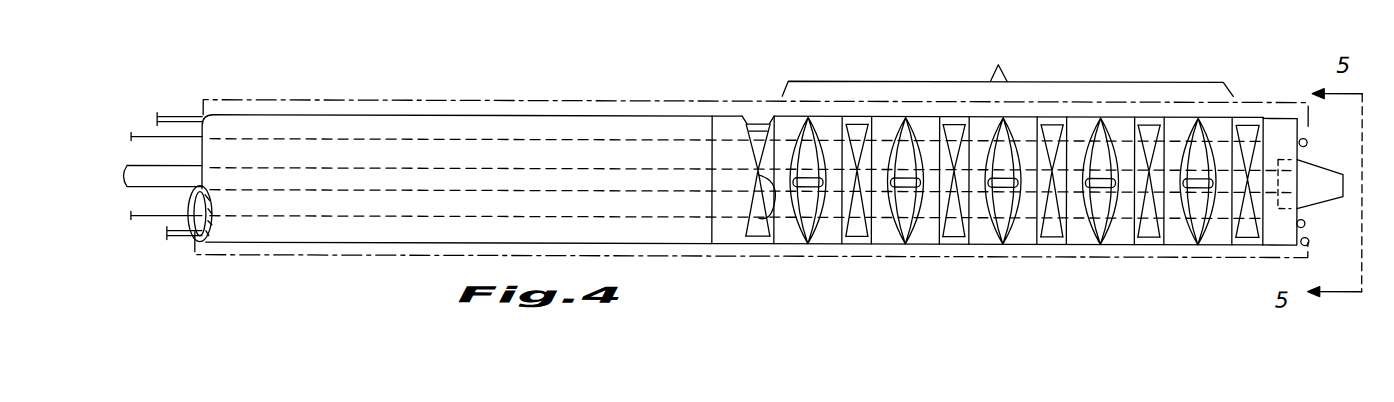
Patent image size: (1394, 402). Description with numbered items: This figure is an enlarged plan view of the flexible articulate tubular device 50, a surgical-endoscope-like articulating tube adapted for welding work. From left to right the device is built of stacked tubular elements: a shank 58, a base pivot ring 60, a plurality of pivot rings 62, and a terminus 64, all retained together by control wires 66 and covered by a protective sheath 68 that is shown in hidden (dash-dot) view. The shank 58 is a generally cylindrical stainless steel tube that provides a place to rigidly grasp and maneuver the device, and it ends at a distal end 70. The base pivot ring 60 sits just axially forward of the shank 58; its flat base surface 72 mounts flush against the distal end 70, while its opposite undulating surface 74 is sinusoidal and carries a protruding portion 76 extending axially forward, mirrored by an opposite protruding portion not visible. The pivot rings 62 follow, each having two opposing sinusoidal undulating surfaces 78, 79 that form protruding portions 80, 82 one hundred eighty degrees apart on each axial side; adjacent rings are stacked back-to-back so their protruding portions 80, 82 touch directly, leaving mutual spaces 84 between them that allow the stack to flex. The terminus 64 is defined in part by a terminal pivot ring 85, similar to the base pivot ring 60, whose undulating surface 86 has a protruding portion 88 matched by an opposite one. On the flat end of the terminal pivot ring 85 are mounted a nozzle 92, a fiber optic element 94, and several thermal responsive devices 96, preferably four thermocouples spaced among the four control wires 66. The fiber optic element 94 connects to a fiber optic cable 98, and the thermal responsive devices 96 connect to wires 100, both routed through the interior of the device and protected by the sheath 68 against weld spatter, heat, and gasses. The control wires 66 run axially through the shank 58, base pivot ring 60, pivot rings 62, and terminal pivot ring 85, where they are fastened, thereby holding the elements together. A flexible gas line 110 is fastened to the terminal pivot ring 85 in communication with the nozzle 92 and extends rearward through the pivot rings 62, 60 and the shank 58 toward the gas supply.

The flexible articulate tubular device 50 is at (497, 86).
The shank 58 is at (293, 122).
The base pivot ring 60 is at (736, 128).
The pivot rings 62 is at (998, 64).
The terminus 64 is at (1305, 155).
The control wires 66 is at (165, 117).
The protective sheath 68 is at (247, 100).
The distal end 70 is at (720, 125).
The base surface 72 is at (708, 140).
The undulating surface 74 is at (757, 148).
The protruding portion 76 is at (766, 218).
The undulating surface 78 is at (953, 176).
The undulating surface 79 is at (1019, 224).
The protruding portion 80 is at (903, 190).
The protruding portion 82 is at (1000, 118).
The mutual spaces 84 is at (857, 225).
The terminal pivot ring 85 is at (1275, 117).
The undulating surface 86 is at (1257, 230).
The protruding portion 88 is at (1247, 182).
The nozzle 92 is at (1318, 192).
The fiber optic element 94 is at (1304, 224).
The thermal responsive devices 96 is at (1306, 140).
The fiber optic cable 98 is at (425, 218).
The wires 100 is at (367, 138).
The flexible gas line 110 is at (320, 192).